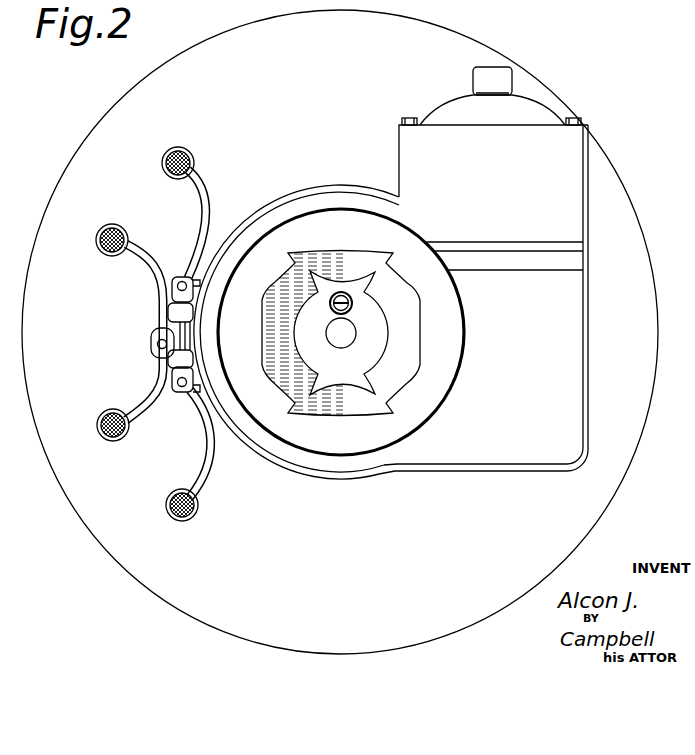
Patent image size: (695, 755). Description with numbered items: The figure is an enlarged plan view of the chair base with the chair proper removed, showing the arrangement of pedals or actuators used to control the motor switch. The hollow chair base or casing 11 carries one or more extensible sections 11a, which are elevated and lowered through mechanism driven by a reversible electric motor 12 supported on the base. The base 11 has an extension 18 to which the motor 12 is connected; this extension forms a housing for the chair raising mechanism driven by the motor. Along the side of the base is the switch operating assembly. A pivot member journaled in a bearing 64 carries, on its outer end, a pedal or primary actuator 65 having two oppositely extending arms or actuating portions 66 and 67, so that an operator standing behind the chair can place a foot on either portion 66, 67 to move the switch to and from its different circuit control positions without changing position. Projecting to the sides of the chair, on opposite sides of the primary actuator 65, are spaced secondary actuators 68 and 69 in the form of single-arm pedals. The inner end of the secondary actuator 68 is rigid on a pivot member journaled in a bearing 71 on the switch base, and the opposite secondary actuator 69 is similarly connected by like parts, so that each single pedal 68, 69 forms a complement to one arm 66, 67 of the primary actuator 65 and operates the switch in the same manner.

The hollow chair base 11 is at (329, 478).
The extensible section 11a is at (376, 331).
The reversible electric motor 12 is at (407, 156).
The extension 18 is at (528, 450).
The bearing 64 is at (190, 334).
The primary actuator 65 is at (157, 340).
The actuating portion 66 is at (107, 247).
The actuating portion 67 is at (107, 437).
The secondary actuator 68 is at (163, 160).
The secondary actuator 69 is at (187, 512).
The bearing 71 is at (198, 277).